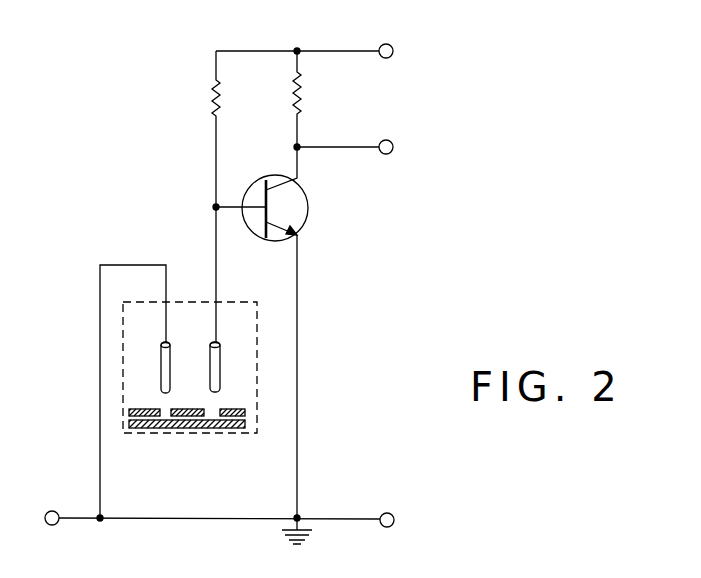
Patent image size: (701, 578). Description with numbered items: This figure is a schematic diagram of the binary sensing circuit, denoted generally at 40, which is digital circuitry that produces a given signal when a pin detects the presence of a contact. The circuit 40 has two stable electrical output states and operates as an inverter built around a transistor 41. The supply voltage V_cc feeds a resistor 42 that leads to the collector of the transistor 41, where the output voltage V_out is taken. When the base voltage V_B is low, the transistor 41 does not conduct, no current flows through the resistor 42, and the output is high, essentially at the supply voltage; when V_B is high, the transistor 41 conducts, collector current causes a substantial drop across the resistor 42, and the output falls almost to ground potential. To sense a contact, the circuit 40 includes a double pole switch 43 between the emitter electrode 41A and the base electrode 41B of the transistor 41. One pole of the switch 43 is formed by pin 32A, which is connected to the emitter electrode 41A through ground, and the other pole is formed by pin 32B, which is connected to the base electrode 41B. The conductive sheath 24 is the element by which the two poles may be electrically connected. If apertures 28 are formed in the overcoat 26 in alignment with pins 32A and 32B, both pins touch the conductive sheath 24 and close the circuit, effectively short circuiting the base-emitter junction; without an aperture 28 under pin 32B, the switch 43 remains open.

The digital circuitry 40 is at (113, 213).
The transistor 41 is at (309, 219).
The emitter electrode 41A is at (276, 224).
The base electrode 41B is at (250, 208).
The resistor 42 is at (303, 105).
The double pole switch 43 is at (96, 331).
The pin 32A is at (161, 352).
The pin 32B is at (248, 375).
The apertures 28 is at (162, 409).
The overcoat 26 is at (246, 415).
The conductive sheath 24 is at (195, 430).